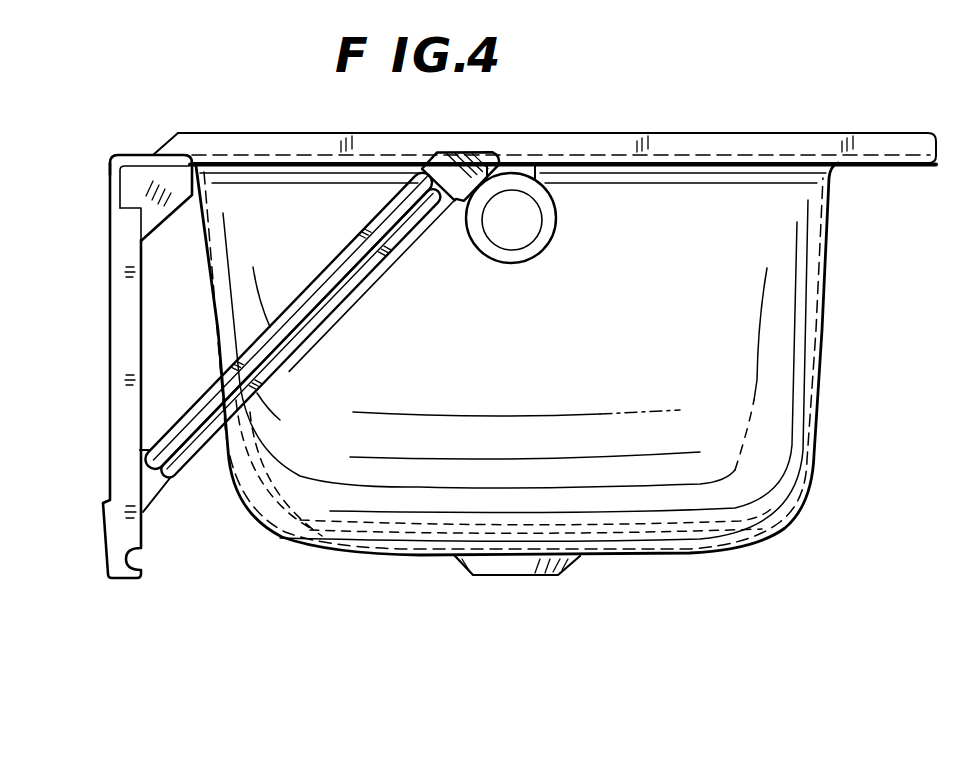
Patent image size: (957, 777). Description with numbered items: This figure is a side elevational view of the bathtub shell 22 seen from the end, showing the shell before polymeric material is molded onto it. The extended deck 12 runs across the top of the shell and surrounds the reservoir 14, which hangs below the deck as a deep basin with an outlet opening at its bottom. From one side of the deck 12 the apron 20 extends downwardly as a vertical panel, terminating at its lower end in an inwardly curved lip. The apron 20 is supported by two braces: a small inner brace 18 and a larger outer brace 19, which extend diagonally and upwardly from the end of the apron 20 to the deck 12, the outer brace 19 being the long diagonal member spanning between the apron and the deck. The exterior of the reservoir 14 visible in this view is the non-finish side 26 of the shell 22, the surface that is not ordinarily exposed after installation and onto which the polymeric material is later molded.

The extended deck 12 is at (903, 133).
The reservoir 14 is at (793, 313).
The small inner brace 18 is at (133, 192).
The larger outer brace 19 is at (200, 452).
The apron 20 is at (110, 398).
The bathtub shell 22 is at (794, 133).
The non-finish side 26 is at (650, 556).